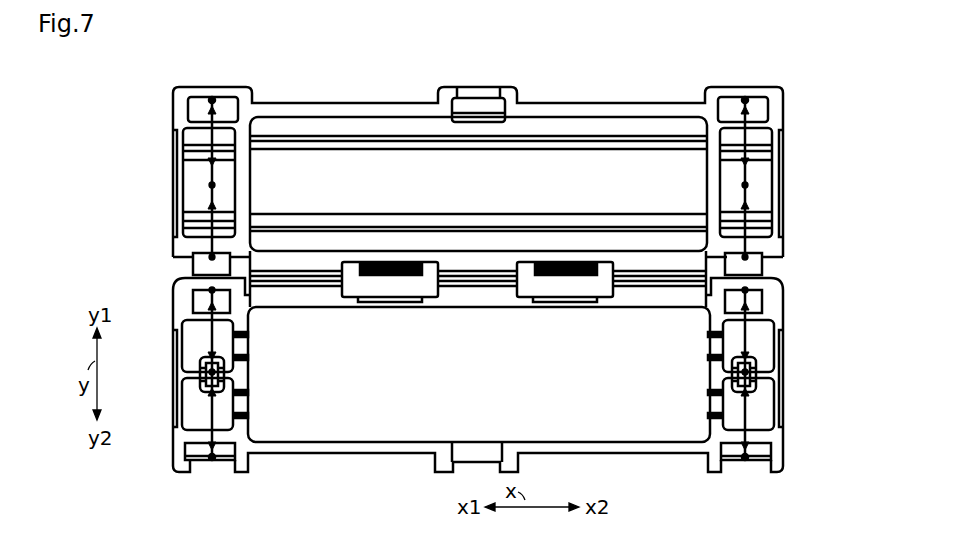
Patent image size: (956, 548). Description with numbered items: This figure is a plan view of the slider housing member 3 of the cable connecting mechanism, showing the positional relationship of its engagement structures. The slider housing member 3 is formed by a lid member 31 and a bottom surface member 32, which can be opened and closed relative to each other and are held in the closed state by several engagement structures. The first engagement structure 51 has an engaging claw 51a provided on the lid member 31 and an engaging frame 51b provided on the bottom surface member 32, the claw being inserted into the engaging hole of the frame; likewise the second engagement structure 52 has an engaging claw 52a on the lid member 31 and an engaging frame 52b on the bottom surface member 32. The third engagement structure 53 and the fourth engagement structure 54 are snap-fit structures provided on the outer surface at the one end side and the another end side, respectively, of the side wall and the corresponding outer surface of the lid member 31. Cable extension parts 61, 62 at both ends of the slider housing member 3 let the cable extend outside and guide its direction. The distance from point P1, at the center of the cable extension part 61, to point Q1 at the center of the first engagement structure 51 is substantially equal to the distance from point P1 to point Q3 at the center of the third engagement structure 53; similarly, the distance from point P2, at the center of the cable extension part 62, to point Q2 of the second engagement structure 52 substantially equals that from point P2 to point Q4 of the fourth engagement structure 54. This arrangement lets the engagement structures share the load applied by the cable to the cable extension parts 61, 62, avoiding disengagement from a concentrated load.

The slider housing member 3 is at (596, 83).
The lid member 31 is at (355, 102).
The bottom surface member 32 is at (357, 447).
The first engagement structure 51 is at (121, 241).
The engaging claw 51a is at (193, 268).
The engaging frame 51b is at (193, 291).
The second engagement structure 52 is at (834, 253).
The engaging claw 52a is at (763, 261).
The engaging frame 52b is at (765, 291).
The third engagement structure 53 is at (223, 97).
The fourth engagement structure 54 is at (734, 97).
The cable extension part 61 is at (220, 415).
The cable extension part 62 is at (737, 412).
The point P1 is at (208, 184).
The point P2 is at (750, 184).
The point Q1 is at (217, 253).
The point Q2 is at (740, 253).
The point Q3 is at (208, 101).
The point Q4 is at (750, 102).